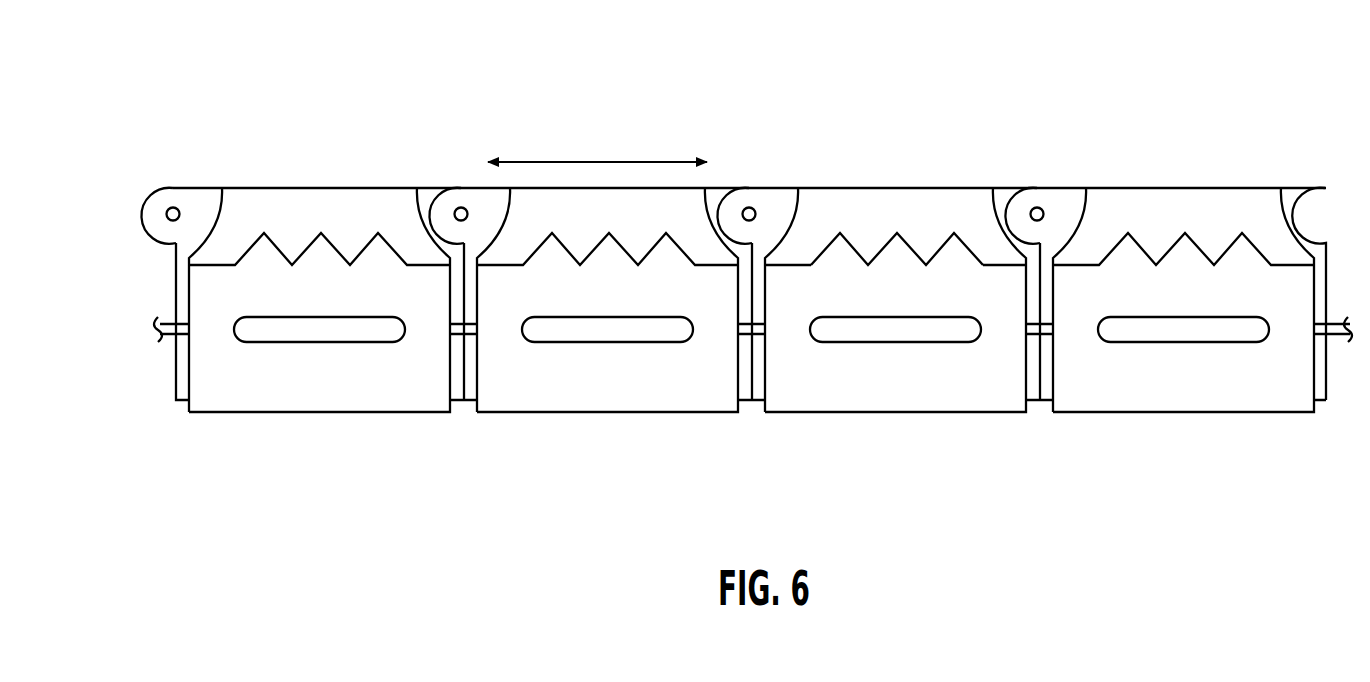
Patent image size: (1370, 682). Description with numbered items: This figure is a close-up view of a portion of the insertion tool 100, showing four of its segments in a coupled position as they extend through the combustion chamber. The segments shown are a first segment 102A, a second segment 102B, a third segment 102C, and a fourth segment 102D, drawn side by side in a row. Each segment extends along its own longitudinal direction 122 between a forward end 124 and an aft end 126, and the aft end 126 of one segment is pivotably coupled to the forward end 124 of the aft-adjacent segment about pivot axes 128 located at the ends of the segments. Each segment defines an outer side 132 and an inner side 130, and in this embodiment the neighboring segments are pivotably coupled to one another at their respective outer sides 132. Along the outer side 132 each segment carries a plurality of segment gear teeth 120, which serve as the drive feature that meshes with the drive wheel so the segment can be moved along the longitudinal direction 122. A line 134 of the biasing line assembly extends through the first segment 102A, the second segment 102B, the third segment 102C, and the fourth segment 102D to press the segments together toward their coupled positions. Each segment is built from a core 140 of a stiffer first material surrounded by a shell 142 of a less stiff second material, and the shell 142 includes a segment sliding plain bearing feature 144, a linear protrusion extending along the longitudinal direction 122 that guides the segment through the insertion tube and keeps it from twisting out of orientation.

The insertion tool 100 is at (888, 95).
The outer side 132 is at (625, 137).
The longitudinal direction 122 is at (573, 162).
The pivot axes 128 is at (460, 207).
The segment gear teeth 120 is at (855, 249).
The line 134 is at (170, 320).
The aft end 126 is at (165, 388).
The forward end 124 is at (472, 385).
The core 140 is at (476, 395).
The shell 142 is at (275, 400).
The inner side 130 is at (565, 502).
The segment sliding plain bearing feature 144 is at (1185, 343).
The first segment 102A is at (353, 402).
The second segment 102B is at (647, 398).
The third segment 102C is at (948, 393).
The fourth segment 102D is at (1240, 388).